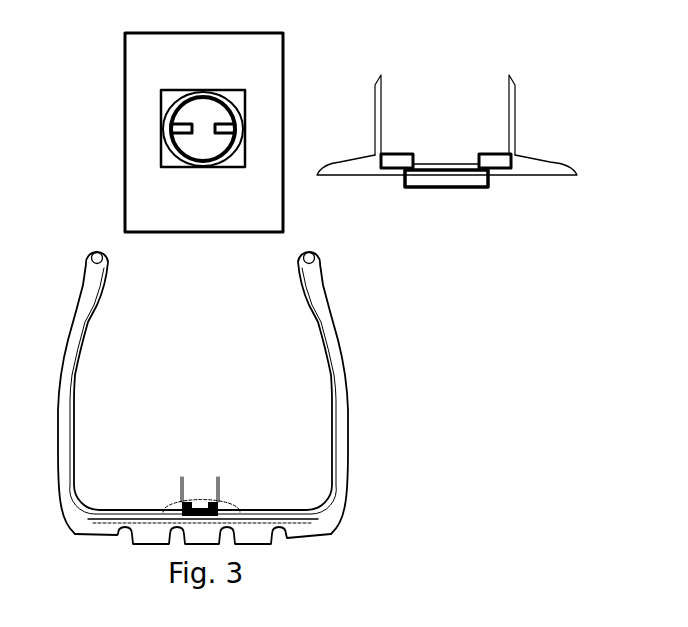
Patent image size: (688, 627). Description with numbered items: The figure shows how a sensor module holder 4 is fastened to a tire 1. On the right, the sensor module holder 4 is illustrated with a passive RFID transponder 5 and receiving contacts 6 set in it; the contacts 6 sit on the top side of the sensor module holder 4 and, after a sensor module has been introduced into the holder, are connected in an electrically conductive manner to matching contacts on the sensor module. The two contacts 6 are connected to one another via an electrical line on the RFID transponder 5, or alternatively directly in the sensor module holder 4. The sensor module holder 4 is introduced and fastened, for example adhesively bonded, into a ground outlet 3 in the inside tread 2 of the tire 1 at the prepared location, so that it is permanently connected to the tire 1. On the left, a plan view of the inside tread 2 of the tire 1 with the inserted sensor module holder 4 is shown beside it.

The tire 1 is at (72, 313).
The inside tread 2 is at (150, 512).
The ground outlet 3 is at (162, 92).
The sensor module holder 4 is at (182, 477).
The passive RFID transponder 5 is at (465, 187).
The receiving contacts 6 is at (185, 135).